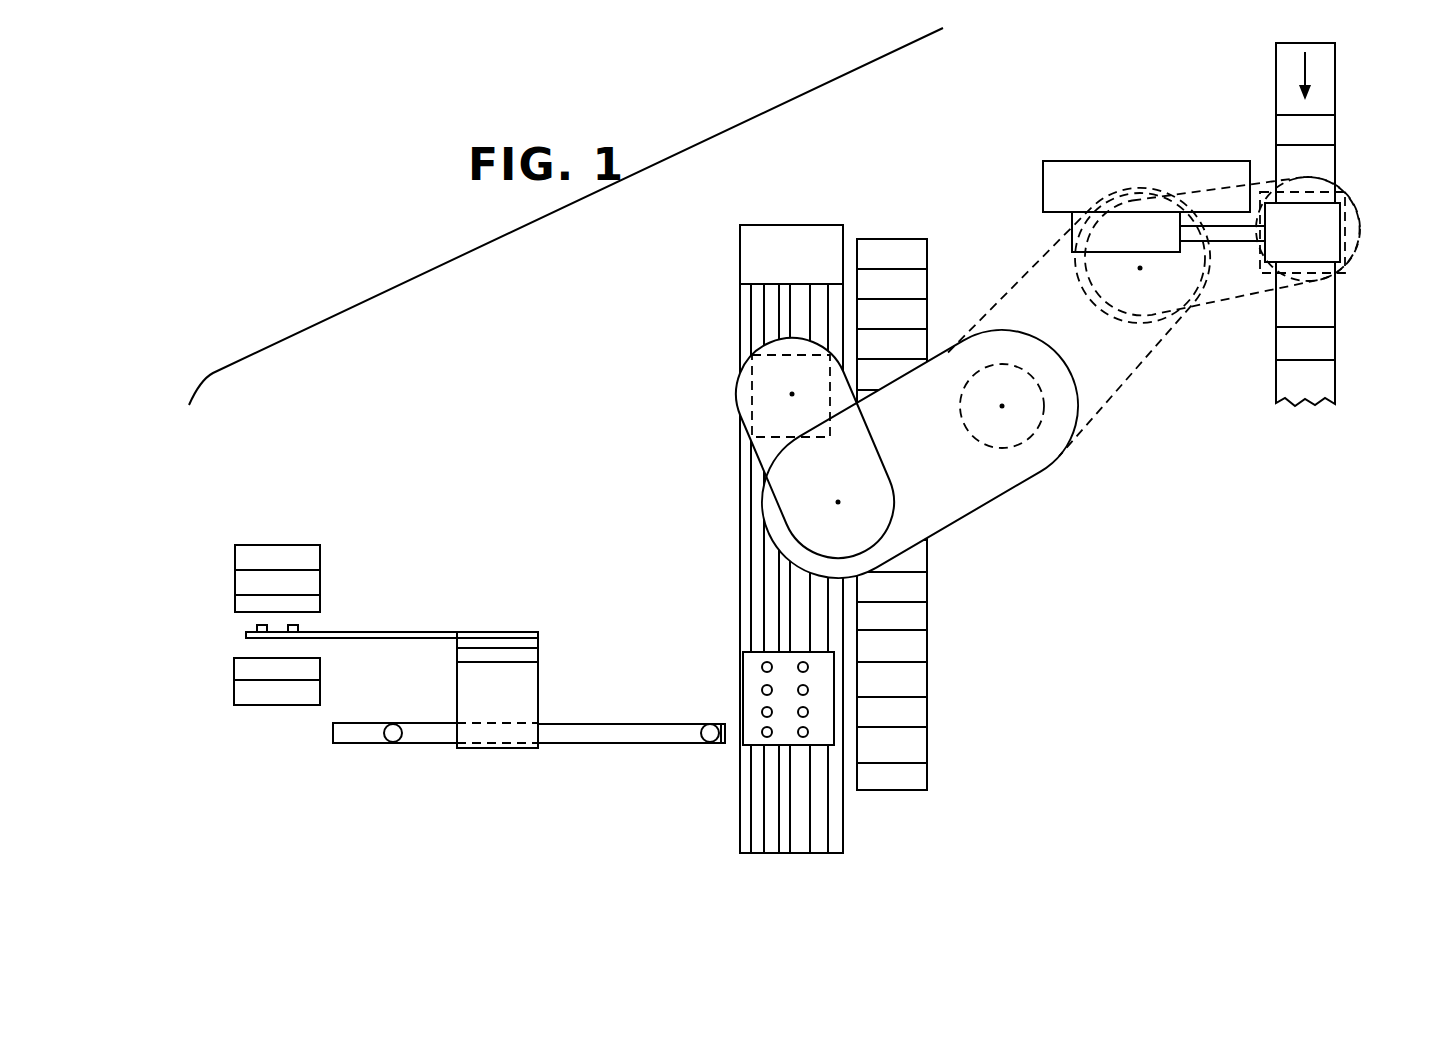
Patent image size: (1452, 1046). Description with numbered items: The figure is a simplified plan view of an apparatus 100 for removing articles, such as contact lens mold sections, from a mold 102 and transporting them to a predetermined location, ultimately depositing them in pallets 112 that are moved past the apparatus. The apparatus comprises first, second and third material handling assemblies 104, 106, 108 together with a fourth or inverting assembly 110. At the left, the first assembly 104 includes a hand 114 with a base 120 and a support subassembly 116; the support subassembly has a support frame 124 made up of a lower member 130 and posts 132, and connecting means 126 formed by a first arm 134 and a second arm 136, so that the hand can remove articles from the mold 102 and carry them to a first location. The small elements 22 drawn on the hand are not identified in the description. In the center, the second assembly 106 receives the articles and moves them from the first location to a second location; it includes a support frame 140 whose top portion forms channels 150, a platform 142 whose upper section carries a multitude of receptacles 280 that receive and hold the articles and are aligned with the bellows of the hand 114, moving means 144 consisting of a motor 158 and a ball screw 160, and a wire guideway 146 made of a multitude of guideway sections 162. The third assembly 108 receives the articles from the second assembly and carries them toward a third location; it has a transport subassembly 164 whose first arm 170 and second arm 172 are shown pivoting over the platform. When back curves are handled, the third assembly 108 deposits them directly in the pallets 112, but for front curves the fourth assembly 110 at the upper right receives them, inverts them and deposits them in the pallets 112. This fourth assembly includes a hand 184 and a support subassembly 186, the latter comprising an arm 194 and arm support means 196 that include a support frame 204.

The apparatus 100 is at (360, 370).
The mold 102 is at (277, 518).
The workpieces 22 is at (245, 628).
The first material handling assembly 104 is at (457, 711).
The hand 114 is at (355, 628).
The base 120 is at (489, 672).
The second arm 136 is at (460, 652).
The connecting means 126 is at (507, 672).
The first arm 134 is at (540, 695).
The support frame 124 is at (600, 722).
The lower member 130 is at (430, 740).
The posts 132 is at (393, 724).
The support subassembly 116 is at (522, 745).
The second material handling assembly 106 is at (809, 528).
The support frame 140 is at (769, 528).
The ball screw 160 is at (785, 305).
The motor 158 is at (812, 238).
The moving means 144 is at (775, 212).
The platform 142 is at (751, 688).
The receptacles 280 is at (760, 667).
The channels 150 is at (750, 850).
The wire guideway 146 is at (940, 610).
The third material handling assembly 108 is at (924, 459).
The transport subassembly 164 is at (907, 459).
The first arm 170 is at (985, 490).
The second arm 172 is at (737, 395).
The guideway sections 162 is at (1015, 450).
The fourth or inverting assembly 110 is at (1180, 249).
The support subassembly 186 is at (1154, 281).
The support frame 204 is at (1185, 165).
The arm support means 196 is at (1072, 225).
The arm 194 is at (1228, 250).
The hand 184 is at (1340, 228).
The pallets 112 is at (1335, 127).